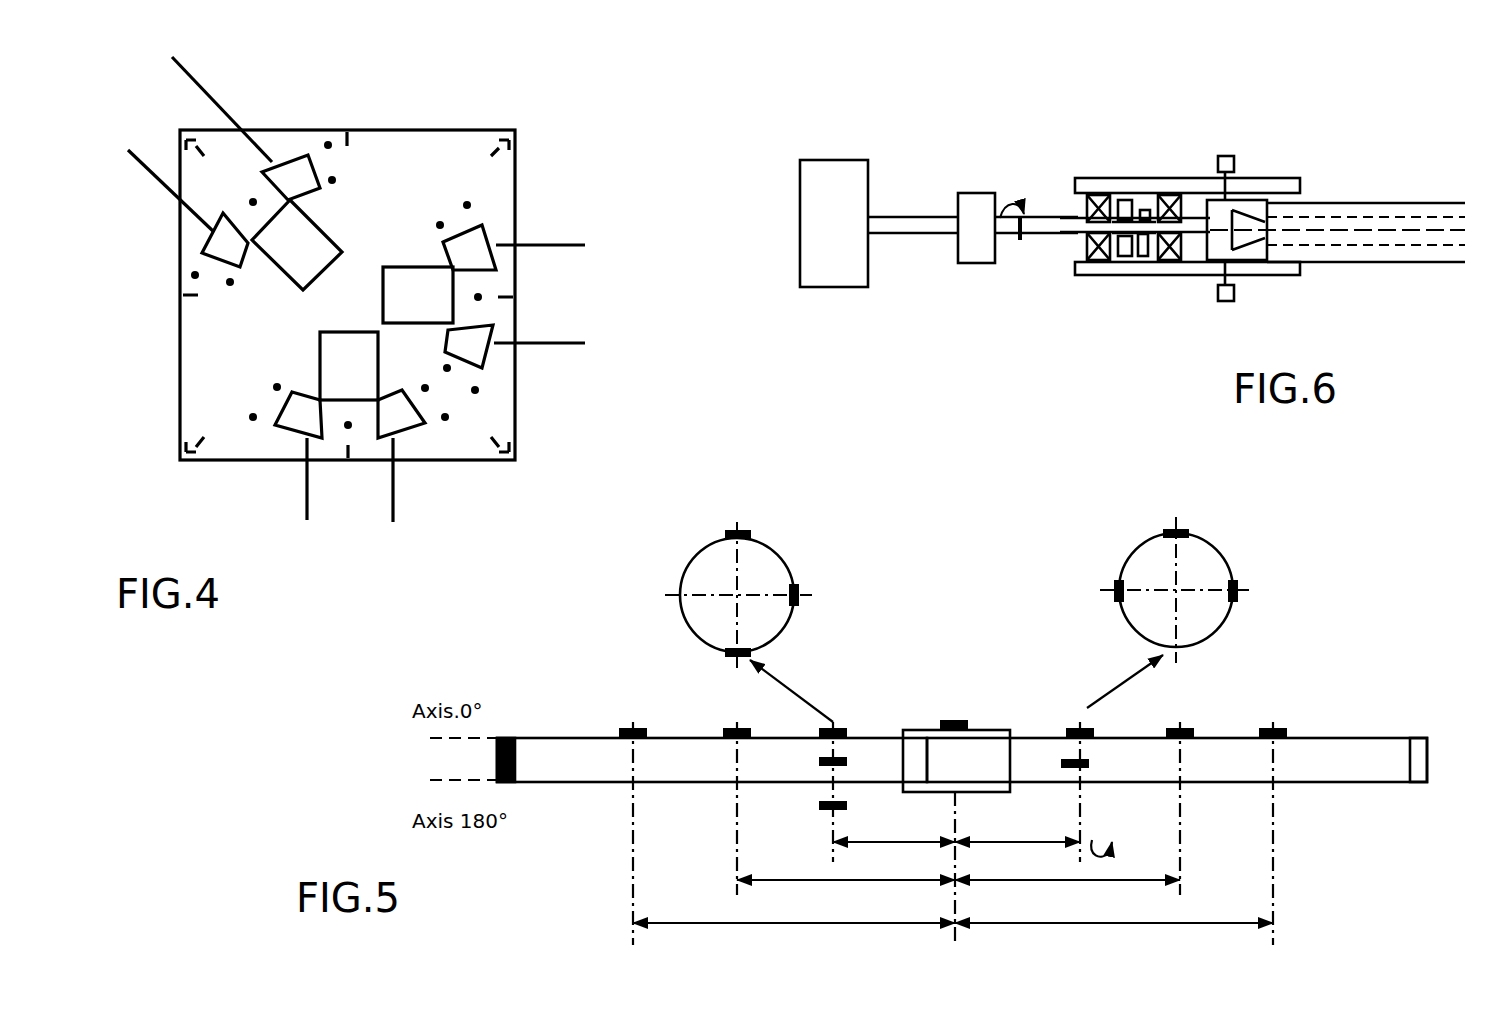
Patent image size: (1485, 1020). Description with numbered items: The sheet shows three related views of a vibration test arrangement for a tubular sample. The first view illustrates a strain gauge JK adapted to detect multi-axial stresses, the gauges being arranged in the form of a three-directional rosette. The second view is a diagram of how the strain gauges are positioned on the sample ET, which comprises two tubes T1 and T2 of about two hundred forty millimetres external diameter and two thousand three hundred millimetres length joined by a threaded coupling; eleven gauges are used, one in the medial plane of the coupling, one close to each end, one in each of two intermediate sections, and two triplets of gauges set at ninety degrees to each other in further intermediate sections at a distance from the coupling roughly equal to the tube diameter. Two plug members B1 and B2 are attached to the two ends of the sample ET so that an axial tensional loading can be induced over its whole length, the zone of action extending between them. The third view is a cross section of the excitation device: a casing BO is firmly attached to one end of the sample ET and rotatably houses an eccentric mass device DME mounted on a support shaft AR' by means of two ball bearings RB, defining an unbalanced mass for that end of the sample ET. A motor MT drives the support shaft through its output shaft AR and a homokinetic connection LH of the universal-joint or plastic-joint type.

In FIG. 4, the strain gauges JK is at (385, 208).
In FIG. 6, the motor MT is at (836, 288).
In FIG. 6, the output shaft AR is at (912, 261).
In FIG. 6, the homokinetic connection LH is at (974, 192).
In FIG. 6, the support shaft AR' is at (1036, 255).
In FIG. 6, the ball bearings RB is at (1148, 192).
In FIG. 6, the eccentric mass device DME is at (1125, 260).
In FIG. 6, the casing BO is at (1272, 185).
In FIG. 6, the sample ET is at (1382, 264).
In FIG. 5, the first tube T1 is at (545, 736).
In FIG. 5, the second tube T2 is at (1362, 736).
In FIG. 5, the plug member B1 is at (510, 783).
In FIG. 5, the plug member B2 is at (1410, 783).